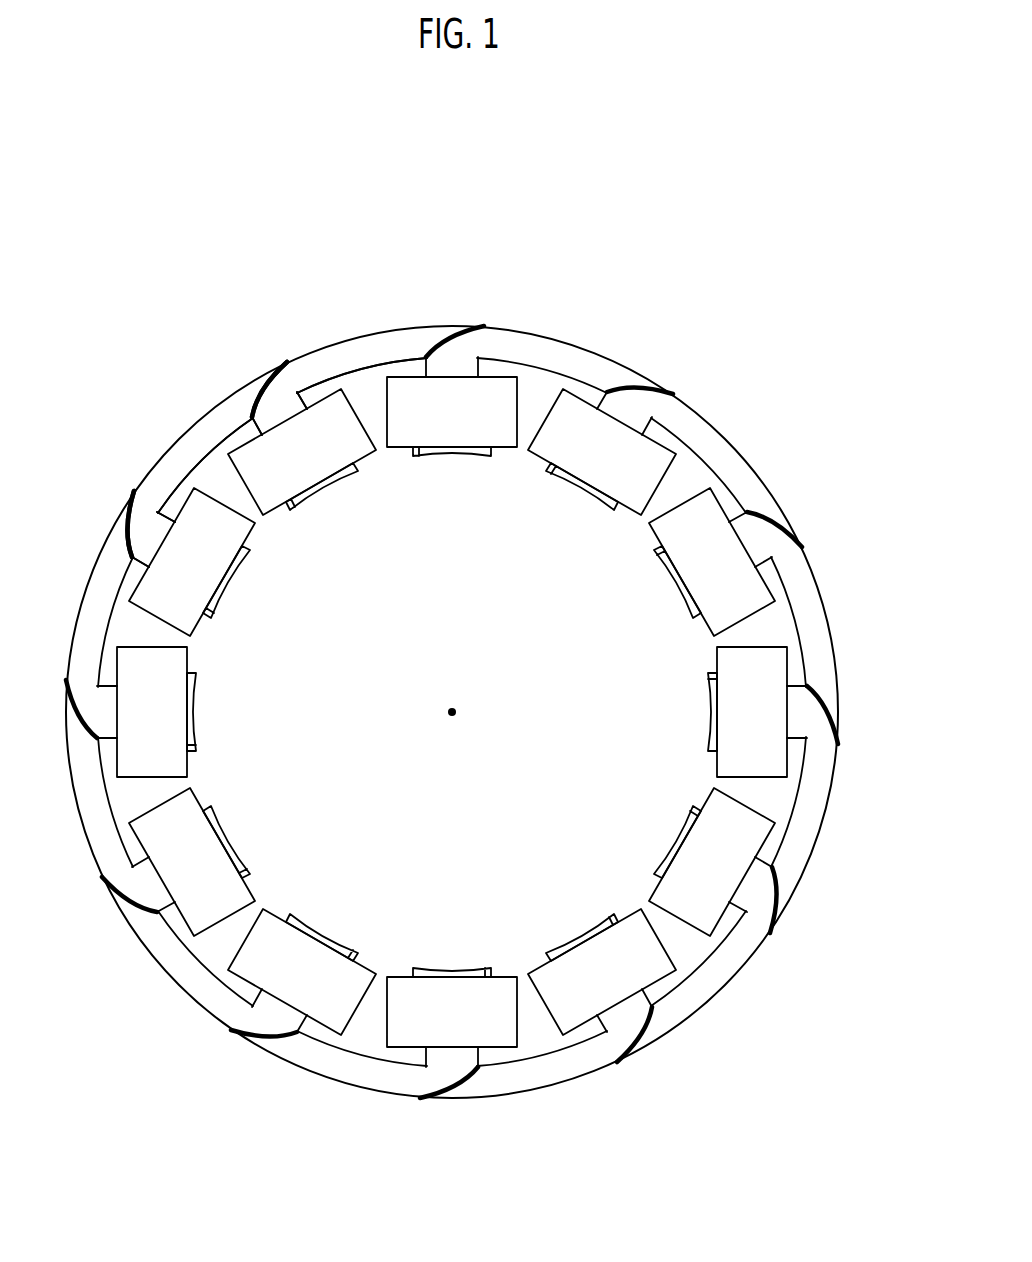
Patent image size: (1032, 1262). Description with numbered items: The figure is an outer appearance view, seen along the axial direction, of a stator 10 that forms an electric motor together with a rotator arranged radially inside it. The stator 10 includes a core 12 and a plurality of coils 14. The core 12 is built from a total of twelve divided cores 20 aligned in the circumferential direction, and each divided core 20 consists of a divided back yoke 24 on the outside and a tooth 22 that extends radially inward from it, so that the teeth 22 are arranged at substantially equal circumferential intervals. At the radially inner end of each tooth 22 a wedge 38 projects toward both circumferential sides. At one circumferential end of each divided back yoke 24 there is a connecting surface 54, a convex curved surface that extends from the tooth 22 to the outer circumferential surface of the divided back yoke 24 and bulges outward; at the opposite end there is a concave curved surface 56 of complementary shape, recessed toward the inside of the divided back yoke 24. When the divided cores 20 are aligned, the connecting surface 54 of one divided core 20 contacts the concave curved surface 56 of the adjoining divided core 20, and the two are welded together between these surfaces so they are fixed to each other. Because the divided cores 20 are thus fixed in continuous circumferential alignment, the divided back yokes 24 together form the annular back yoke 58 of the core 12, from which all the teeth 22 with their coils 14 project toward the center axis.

The stator 10 is at (790, 96).
The core 12 is at (348, 300).
The coils 14 is at (538, 455).
The divided core 20 is at (737, 430).
The tooth 22 is at (453, 458).
The divided back yoke 24 is at (188, 442).
The wedge 38 is at (292, 507).
The connecting surface 54 is at (442, 340).
The concave curved surface 56 is at (500, 328).
The back yoke 58 is at (172, 242).